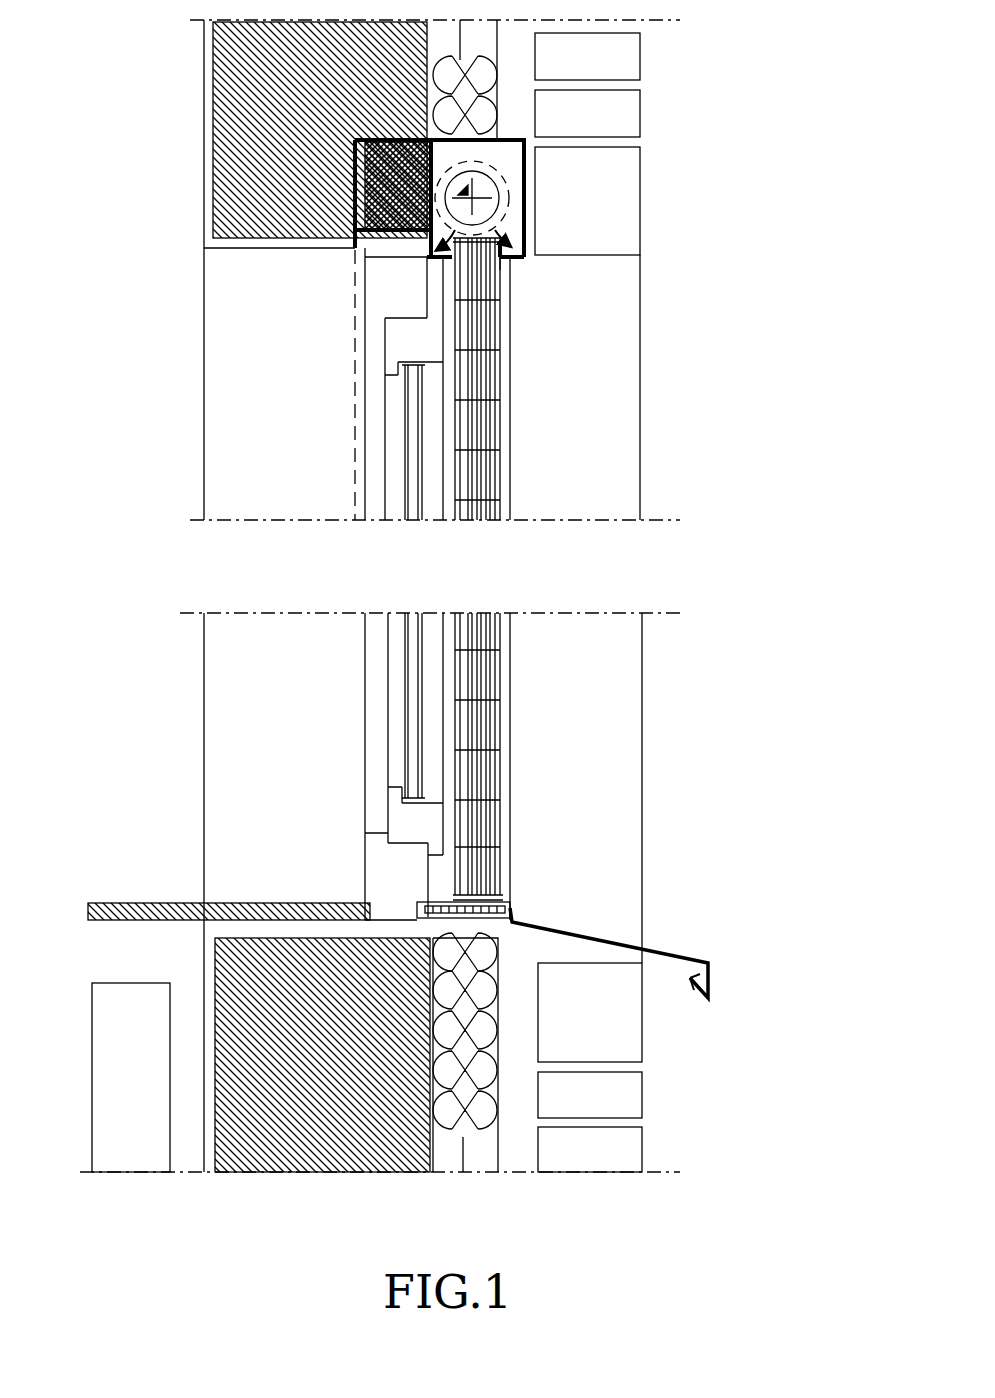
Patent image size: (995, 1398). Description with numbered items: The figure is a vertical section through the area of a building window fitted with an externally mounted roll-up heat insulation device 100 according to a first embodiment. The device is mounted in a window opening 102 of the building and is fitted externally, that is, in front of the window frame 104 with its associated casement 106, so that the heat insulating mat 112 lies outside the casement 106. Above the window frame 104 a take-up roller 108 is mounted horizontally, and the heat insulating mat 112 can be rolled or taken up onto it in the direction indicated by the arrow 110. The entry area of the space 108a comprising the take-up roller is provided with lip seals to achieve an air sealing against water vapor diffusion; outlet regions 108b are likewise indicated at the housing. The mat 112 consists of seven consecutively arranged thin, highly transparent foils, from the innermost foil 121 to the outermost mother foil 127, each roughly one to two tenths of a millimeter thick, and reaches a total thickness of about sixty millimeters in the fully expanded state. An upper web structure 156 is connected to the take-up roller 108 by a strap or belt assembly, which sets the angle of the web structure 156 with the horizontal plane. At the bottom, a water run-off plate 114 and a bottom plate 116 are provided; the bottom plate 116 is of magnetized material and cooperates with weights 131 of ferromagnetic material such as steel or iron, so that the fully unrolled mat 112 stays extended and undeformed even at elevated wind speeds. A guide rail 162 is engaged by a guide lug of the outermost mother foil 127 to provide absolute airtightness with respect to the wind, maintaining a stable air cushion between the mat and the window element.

The roll-up heat insulation device 100 is at (605, 415).
The window opening 102 is at (320, 937).
The window frame 104 is at (390, 293).
The casement 106 is at (410, 340).
The take-up roller 108 is at (493, 205).
The space comprising the take-up roller 108a is at (500, 218).
The air outlet openings 108b is at (437, 250).
The arrow 110 is at (473, 183).
The heat insulating mat 112 is at (488, 687).
The water run-off plate 114 is at (650, 950).
The bottom plate 116 is at (517, 921).
The foil 121 is at (455, 773).
The outermost mother foil 127 is at (503, 733).
The weights 131 is at (457, 897).
The upper web structure 156 is at (497, 263).
The guide rail 162 is at (507, 495).